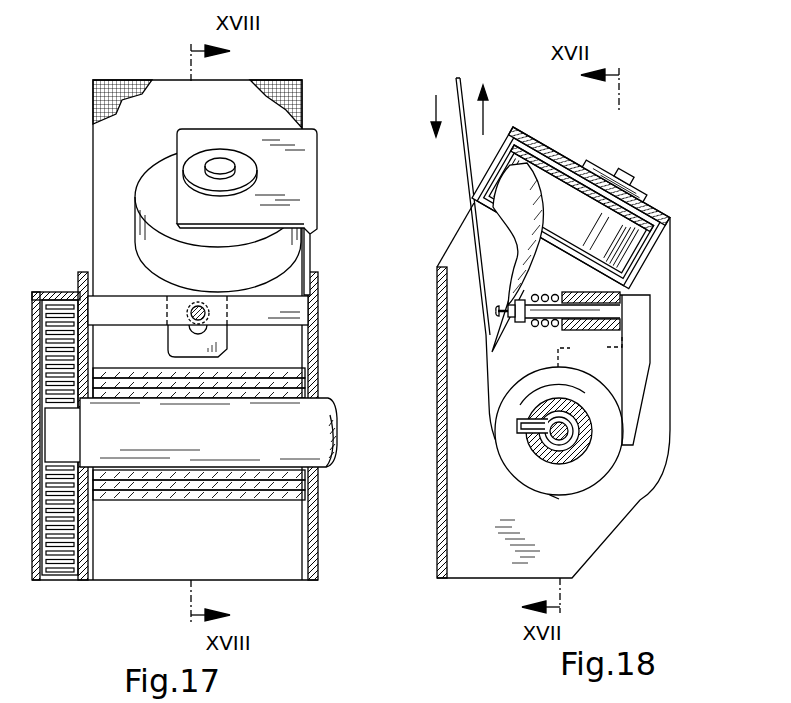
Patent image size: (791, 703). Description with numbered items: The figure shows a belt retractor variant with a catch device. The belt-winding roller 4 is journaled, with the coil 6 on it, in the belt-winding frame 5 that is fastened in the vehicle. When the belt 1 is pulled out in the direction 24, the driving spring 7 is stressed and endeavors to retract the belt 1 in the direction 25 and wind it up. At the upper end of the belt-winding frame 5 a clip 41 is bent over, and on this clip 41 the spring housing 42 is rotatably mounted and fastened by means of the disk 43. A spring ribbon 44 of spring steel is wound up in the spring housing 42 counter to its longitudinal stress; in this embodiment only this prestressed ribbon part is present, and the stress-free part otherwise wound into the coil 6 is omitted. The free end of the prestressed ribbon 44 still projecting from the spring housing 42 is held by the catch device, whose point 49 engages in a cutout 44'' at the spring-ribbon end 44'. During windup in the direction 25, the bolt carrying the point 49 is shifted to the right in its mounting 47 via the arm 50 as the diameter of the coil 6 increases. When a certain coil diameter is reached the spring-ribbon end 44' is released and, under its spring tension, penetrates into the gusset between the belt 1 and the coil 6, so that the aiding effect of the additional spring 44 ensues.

In FIG. 17, the belt 1 is at (107, 138).
In FIG. 18, the belt 1 is at (464, 160).
In FIG. 17, the belt-winding roller 4 is at (55, 437).
In FIG. 18, the belt-winding roller 4 is at (588, 423).
In FIG. 17, the belt-winding frame 5 is at (316, 577).
In FIG. 18, the belt-winding frame 5 is at (622, 510).
In FIG. 17, the coil 6 is at (143, 500).
In FIG. 18, the coil 6 is at (604, 462).
In FIG. 17, the driving spring 7 is at (60, 560).
In FIG. 18, the pull-out direction 24 is at (487, 108).
In FIG. 18, the retraction direction 25 is at (436, 108).
In FIG. 17, the clip 41 is at (306, 176).
In FIG. 18, the clip 41 is at (578, 208).
In FIG. 18, the spring housing 42 is at (640, 262).
In FIG. 18, the disk 43 is at (618, 180).
In FIG. 17, the spring ribbon 44 is at (173, 221).
In FIG. 18, the spring ribbon 44 is at (476, 234).
In FIG. 17, the spring-ribbon end 44' is at (168, 332).
In FIG. 17, the cutout 44'' is at (236, 327).
In FIG. 18, the mounting 47 is at (622, 320).
In FIG. 18, the point 49 is at (505, 311).
In FIG. 18, the arm 50 is at (637, 376).